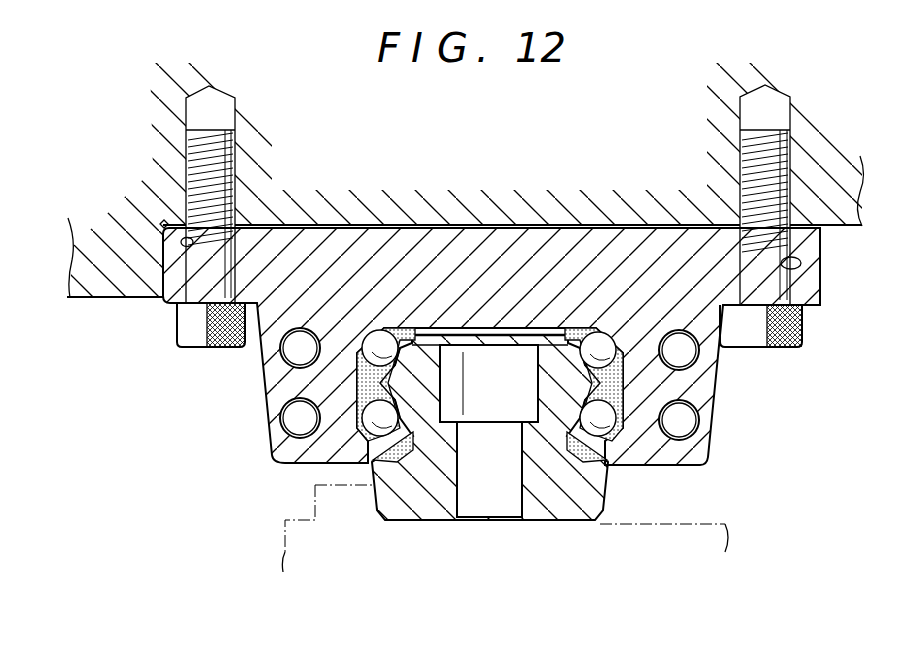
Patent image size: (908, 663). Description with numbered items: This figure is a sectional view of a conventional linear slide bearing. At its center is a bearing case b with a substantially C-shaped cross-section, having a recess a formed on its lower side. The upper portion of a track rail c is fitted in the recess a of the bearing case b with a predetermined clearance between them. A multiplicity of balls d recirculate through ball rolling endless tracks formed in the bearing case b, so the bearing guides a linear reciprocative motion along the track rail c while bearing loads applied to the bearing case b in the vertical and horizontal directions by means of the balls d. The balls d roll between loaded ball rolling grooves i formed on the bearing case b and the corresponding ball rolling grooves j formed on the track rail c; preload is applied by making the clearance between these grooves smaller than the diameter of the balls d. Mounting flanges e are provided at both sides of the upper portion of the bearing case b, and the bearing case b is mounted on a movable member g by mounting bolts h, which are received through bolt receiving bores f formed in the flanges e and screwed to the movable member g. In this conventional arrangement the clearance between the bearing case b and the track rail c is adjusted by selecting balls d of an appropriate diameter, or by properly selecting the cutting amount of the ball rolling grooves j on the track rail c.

The recess a is at (486, 335).
The bearing case b is at (366, 226).
The track rail c is at (425, 488).
The balls d is at (372, 440).
The mounting flanges e is at (171, 282).
The bolt receiving bores f is at (178, 246).
The movable member g is at (655, 195).
The mounting bolts h is at (187, 157).
The loaded ball rolling grooves i is at (598, 332).
The ball rolling grooves j is at (400, 422).